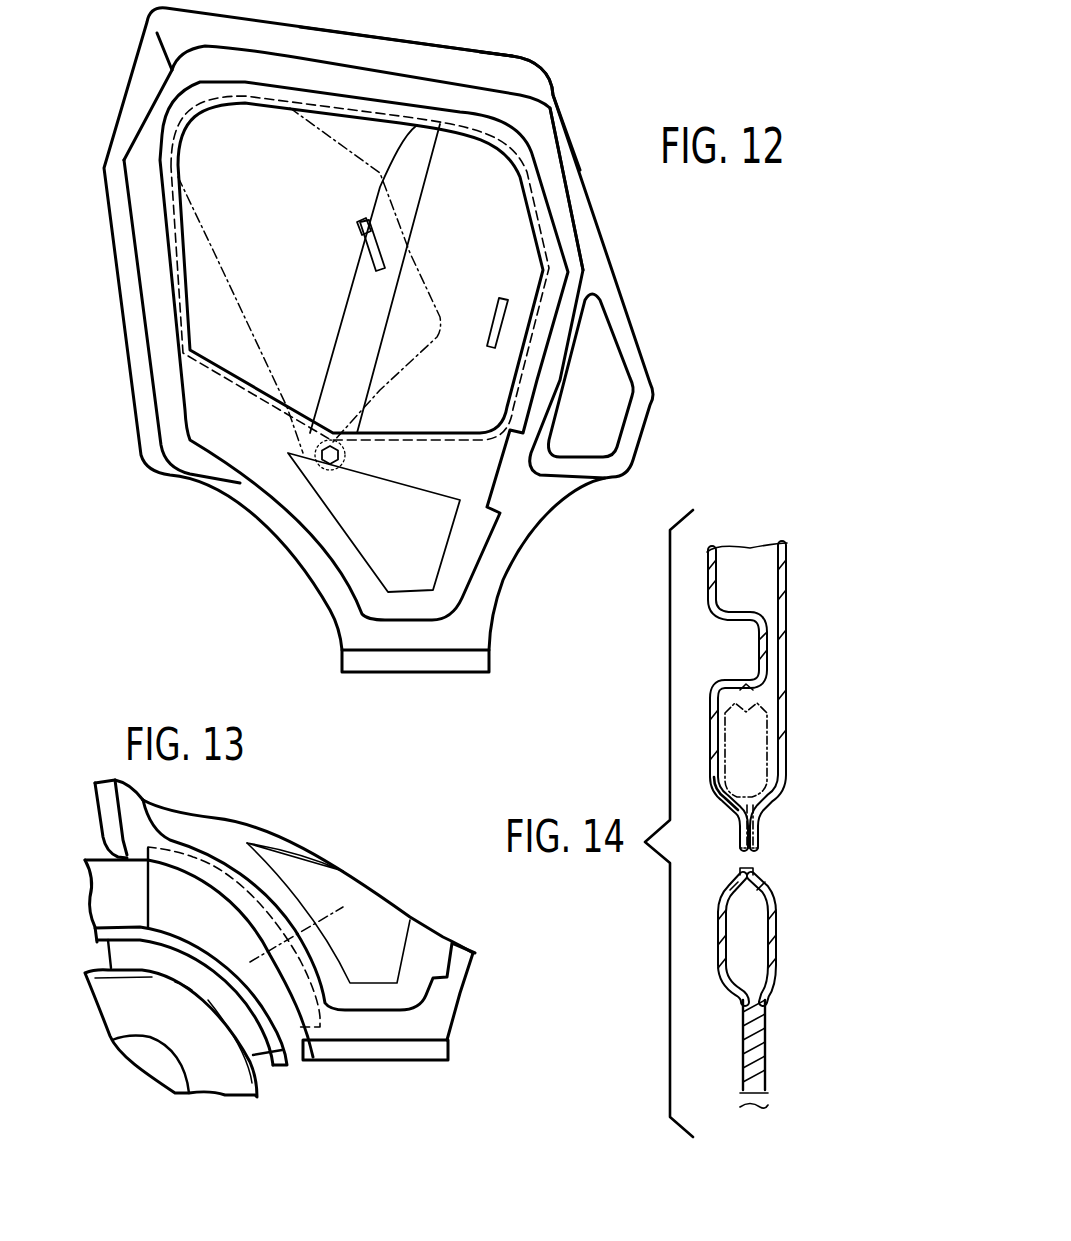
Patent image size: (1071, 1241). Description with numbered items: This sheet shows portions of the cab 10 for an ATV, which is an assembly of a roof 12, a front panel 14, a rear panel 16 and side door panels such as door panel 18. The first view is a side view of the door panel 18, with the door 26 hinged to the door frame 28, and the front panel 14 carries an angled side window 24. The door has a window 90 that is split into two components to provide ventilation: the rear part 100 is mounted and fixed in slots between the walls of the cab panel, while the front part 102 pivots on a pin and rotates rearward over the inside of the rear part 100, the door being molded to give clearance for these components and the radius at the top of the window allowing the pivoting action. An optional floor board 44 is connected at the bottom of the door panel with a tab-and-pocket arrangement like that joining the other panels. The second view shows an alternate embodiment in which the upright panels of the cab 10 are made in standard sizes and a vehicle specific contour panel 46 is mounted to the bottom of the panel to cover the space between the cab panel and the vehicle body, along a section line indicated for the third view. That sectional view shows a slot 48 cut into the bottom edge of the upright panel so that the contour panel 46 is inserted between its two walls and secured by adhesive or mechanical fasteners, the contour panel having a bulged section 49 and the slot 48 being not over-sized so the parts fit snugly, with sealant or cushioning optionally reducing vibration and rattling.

In FIG. 13, the cab 10 is at (440, 1014).
In FIG. 12, the roof panel 12 is at (402, 40).
In FIG. 12, the front panel 14 is at (563, 107).
In FIG. 13, the front panel 14 is at (358, 942).
In FIG. 12, the rear panel 16 is at (125, 386).
In FIG. 13, the rear panel 16 is at (103, 790).
In FIG. 12, the side door panel 18 is at (235, 486).
In FIG. 14, the side door panel 18 is at (789, 692).
In FIG. 12, the angled side window 24 is at (607, 357).
In FIG. 12, the door 26 is at (477, 493).
In FIG. 13, the door 26 is at (213, 827).
In FIG. 12, the door frame 28 is at (153, 273).
In FIG. 13, the door frame 28 is at (130, 823).
In FIG. 12, the floor board 44 is at (420, 677).
In FIG. 13, the floor board 44 is at (368, 1058).
In FIG. 13, the vehicle specific contour panel 46 is at (167, 912).
In FIG. 14, the vehicle specific contour panel 46 is at (753, 827).
In FIG. 14, the slot 48 is at (731, 808).
In FIG. 14, the bulged section 49 is at (787, 752).
In FIG. 12, the window 90 is at (507, 203).
In FIG. 12, the rear part 100 is at (376, 135).
In FIG. 12, the front part 102 is at (520, 243).